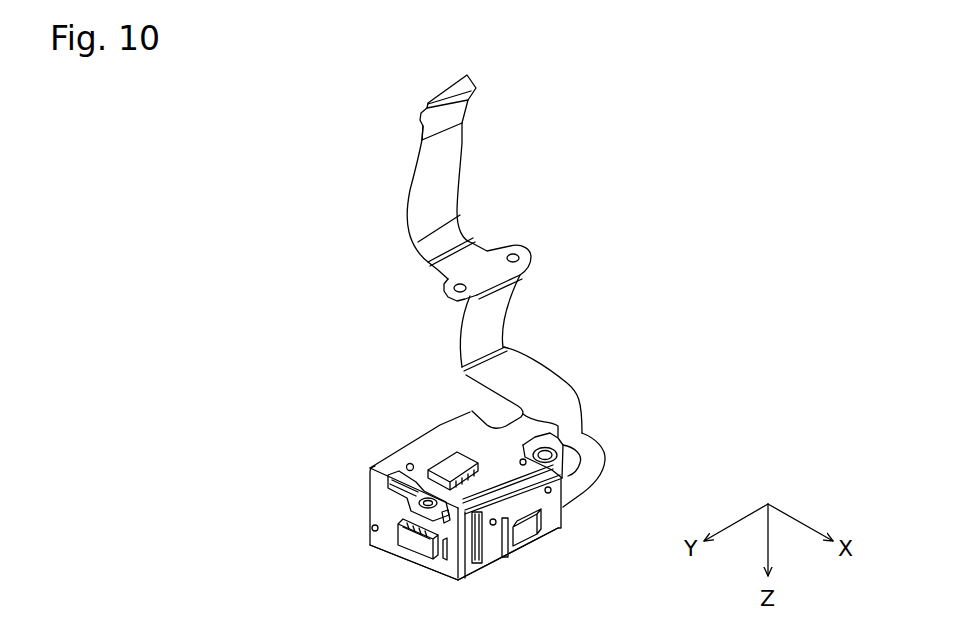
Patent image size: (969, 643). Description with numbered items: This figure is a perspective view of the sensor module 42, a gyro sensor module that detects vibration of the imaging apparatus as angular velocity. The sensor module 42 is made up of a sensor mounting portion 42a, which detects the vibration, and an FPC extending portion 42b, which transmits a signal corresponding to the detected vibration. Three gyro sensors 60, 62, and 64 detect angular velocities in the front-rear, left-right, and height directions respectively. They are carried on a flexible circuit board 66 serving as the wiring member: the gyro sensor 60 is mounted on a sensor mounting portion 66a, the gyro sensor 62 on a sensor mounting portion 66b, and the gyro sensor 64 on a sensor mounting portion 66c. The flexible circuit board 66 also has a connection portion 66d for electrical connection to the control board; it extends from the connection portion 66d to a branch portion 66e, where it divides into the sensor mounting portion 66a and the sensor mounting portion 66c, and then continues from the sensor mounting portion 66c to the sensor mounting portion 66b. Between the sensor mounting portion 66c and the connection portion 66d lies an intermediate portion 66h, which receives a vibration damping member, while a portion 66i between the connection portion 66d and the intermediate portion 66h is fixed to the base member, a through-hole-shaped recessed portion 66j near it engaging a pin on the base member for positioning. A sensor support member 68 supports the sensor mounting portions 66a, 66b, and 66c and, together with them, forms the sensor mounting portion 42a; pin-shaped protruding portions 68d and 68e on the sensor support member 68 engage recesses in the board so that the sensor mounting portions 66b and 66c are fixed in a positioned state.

The sensor module 42 is at (332, 312).
The sensor mounting portion 42a is at (438, 413).
The FPC extending portion 42b is at (380, 173).
The gyro sensor 60 is at (529, 531).
The gyro sensor 62 is at (423, 547).
The gyro sensor 64 is at (450, 467).
The flexible circuit board 66 is at (463, 166).
The sensor mounting portion 66a is at (505, 552).
The sensor mounting portion 66b is at (378, 547).
The sensor mounting portion 66c is at (453, 437).
The connection portion 66d is at (448, 88).
The branch portion 66e is at (553, 414).
The intermediate portion 66h is at (506, 367).
The portion 66i is at (489, 268).
The recessed portion 66j is at (531, 251).
The sensor support member 68 is at (386, 491).
The protruding portion 68d is at (372, 521).
The protruding portion 68e is at (583, 436).